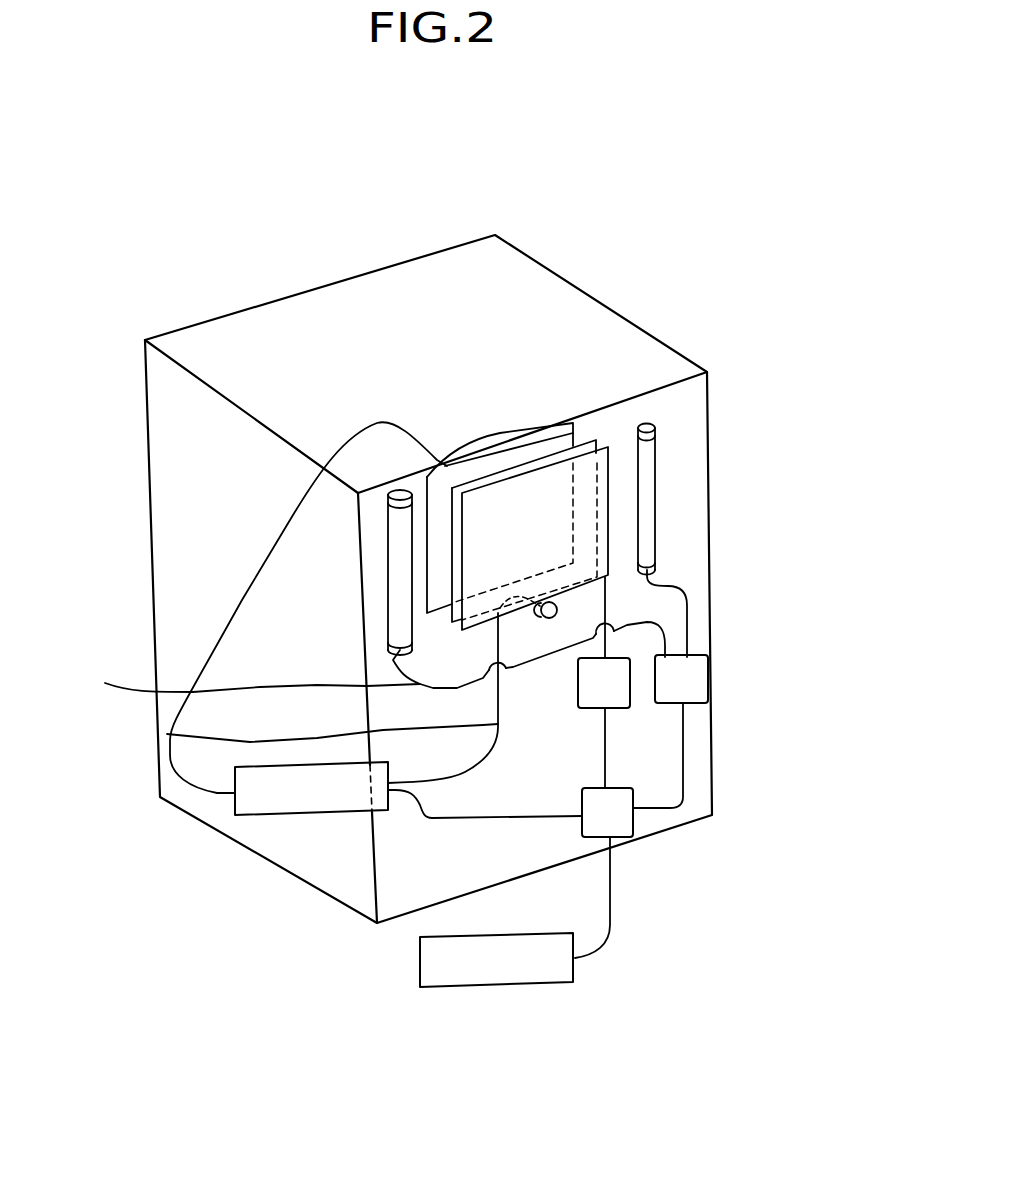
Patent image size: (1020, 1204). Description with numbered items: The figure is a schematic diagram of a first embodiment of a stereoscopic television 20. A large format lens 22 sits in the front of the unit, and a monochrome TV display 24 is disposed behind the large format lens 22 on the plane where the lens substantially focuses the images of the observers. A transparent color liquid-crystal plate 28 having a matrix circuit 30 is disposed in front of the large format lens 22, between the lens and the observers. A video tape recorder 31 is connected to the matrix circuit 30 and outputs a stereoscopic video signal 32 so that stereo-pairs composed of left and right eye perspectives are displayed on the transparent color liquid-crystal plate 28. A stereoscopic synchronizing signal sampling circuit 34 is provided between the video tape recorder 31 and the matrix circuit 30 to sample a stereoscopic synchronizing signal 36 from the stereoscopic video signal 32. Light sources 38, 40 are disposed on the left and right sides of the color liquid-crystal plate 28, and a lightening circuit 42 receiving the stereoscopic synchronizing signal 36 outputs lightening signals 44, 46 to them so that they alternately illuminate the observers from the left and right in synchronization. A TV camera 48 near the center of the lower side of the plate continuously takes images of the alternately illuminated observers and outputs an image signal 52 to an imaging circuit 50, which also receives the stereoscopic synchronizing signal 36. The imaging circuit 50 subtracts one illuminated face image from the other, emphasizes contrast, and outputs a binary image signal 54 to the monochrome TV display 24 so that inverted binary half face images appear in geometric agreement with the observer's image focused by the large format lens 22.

The stereoscopic television 20 is at (505, 237).
The large format lens 22 is at (587, 438).
The monochrome TV display 24 is at (507, 437).
The transparent color liquid-crystal plate 28 is at (607, 447).
The matrix circuit 30 is at (607, 692).
The video tape recorder 31 is at (433, 972).
The stereoscopic video signal 32 is at (608, 767).
The stereoscopic synchronizing signal sampling circuit 34 is at (618, 820).
The stereoscopic synchronizing signal 36 is at (477, 818).
The light source 38 is at (393, 572).
The light source 40 is at (655, 471).
The lightening circuit 42 is at (700, 678).
The lightening signal 44 is at (366, 661).
The lightening signal 46 is at (688, 618).
The TV camera 48 is at (557, 607).
The imaging circuit 50 is at (303, 817).
The image signal 52 is at (167, 734).
The binary image signal 54 is at (222, 628).